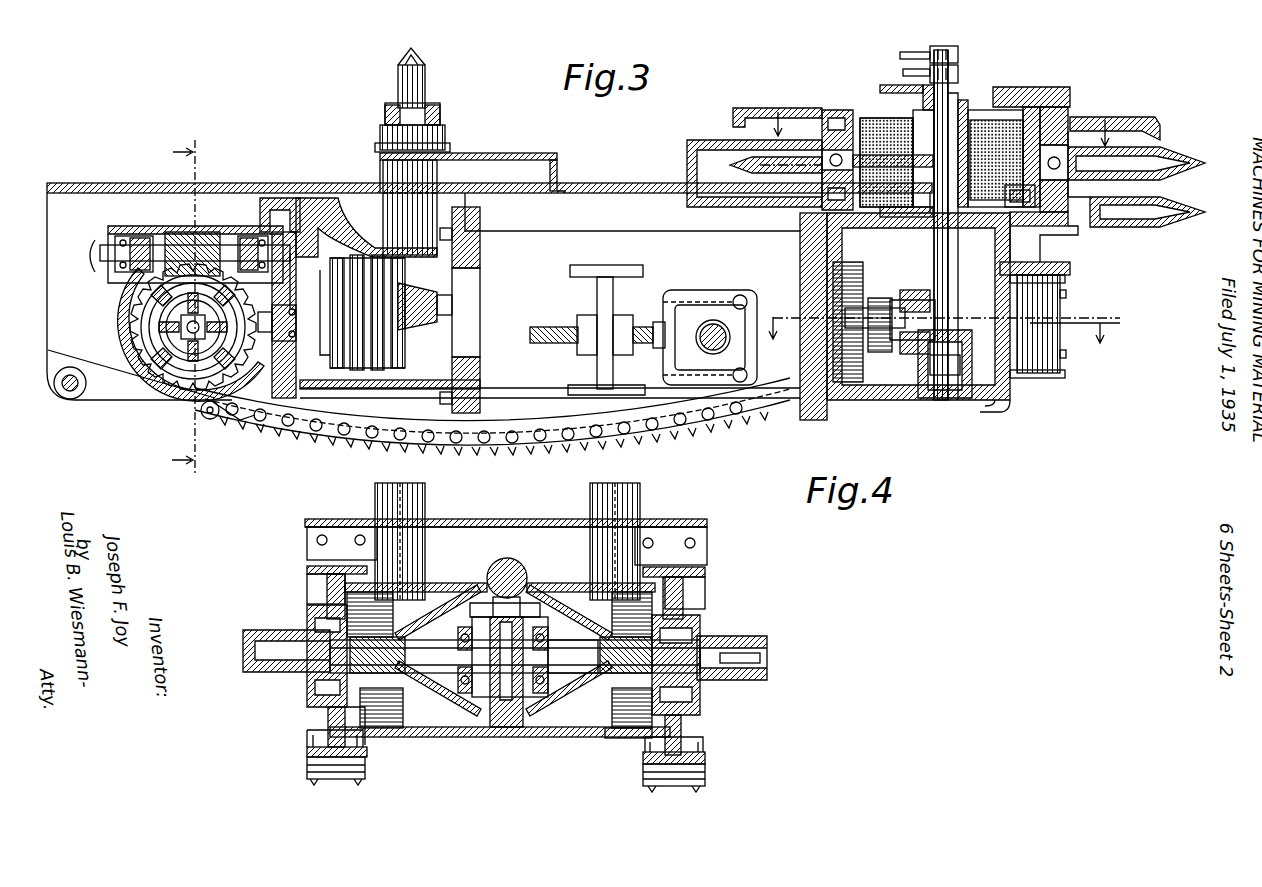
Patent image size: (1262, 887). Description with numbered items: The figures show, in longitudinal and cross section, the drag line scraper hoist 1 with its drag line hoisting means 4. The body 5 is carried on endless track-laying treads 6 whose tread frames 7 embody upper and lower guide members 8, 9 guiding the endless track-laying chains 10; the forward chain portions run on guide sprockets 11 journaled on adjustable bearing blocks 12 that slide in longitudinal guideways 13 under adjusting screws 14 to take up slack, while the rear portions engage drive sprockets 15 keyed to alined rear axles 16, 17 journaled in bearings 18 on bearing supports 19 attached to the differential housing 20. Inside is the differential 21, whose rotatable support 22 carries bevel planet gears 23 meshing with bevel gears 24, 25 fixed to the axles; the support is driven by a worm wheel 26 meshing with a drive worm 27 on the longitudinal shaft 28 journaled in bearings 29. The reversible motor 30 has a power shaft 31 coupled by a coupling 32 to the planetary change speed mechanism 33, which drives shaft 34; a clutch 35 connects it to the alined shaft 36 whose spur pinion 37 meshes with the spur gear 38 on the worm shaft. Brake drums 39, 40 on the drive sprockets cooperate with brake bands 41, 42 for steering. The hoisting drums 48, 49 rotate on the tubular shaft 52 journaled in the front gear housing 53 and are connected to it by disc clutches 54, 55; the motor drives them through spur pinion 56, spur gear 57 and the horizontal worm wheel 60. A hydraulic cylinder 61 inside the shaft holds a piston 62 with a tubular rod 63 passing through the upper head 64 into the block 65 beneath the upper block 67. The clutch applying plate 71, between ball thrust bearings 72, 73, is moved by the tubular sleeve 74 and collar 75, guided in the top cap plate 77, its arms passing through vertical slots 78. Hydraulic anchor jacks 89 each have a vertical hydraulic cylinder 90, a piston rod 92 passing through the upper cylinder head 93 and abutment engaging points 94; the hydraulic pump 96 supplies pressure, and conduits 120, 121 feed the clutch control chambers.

In FIG. 4, the drag line scraper hoist 1 is at (704, 521).
In FIG. 3, the drag line hoisting means 4 is at (175, 307).
In FIG. 3, the body 5 is at (943, 339).
In FIG. 3, the endless track-laying treads 6 is at (497, 452).
In FIG. 4, the endless track-laying treads 6 is at (307, 770).
In FIG. 3, the tread frames 7 is at (356, 440).
In FIG. 4, the tread frames 7 is at (310, 593).
In FIG. 4, the upper guide member 8 is at (307, 560).
In FIG. 4, the lower guide member 9 is at (305, 735).
In FIG. 3, the endless track-laying chains 10 is at (190, 412).
In FIG. 4, the endless track-laying chains 10 is at (322, 737).
In FIG. 3, the guide sprockets 11 is at (733, 430).
In FIG. 3, the adjustable bearing blocks 12 is at (708, 300).
In FIG. 3, the longitudinal guideways 13 is at (690, 310).
In FIG. 3, the adjusting screws 14 is at (567, 323).
In FIG. 4, the drive sprockets 15 is at (317, 580).
In FIG. 4, the rear axle 16 is at (428, 715).
In FIG. 4, the rear axle 17 is at (597, 673).
In FIG. 4, the bearings 18 is at (317, 693).
In FIG. 4, the bearing supports 19 is at (393, 740).
In FIG. 3, the differential housing 20 is at (140, 380).
In FIG. 4, the differential housing 20 is at (510, 730).
In FIG. 4, the differential 21 is at (462, 700).
In FIG. 4, the rotatable support 22 is at (520, 700).
In FIG. 3, the bevel planet gears 23 is at (190, 300).
In FIG. 4, the bevel planet gears 23 is at (520, 623).
In FIG. 4, the bevel gear 24 is at (475, 630).
In FIG. 4, the bevel gear 25 is at (558, 645).
In FIG. 3, the worm wheel 26 is at (137, 318).
In FIG. 4, the worm wheel 26 is at (492, 740).
In FIG. 3, the drive worm 27 is at (177, 227).
In FIG. 4, the drive worm 27 is at (509, 557).
In FIG. 3, the longitudinal shaft 28 is at (227, 227).
In FIG. 3, the bearings 29 is at (133, 227).
In FIG. 3, the motor 30 is at (600, 232).
In FIG. 3, the power shaft 31 is at (467, 303).
In FIG. 3, the coupling 32 is at (417, 280).
In FIG. 3, the planetary slip controlled change speed mechanism 33 is at (370, 253).
In FIG. 3, the shaft 34 is at (307, 217).
In FIG. 3, the clutch 35 is at (296, 318).
In FIG. 3, the alined shaft 36 is at (281, 327).
In FIG. 3, the spur pinion 37 is at (233, 424).
In FIG. 3, the spur gear 38 is at (280, 215).
In FIG. 4, the brake drum 39 is at (353, 723).
In FIG. 4, the brake drum 40 is at (637, 740).
In FIG. 4, the brake band 41 is at (373, 740).
In FIG. 4, the brake band 42 is at (617, 740).
In FIG. 3, the upper hoisting drum 48 is at (1140, 118).
In FIG. 3, the lower hoisting drum 49 is at (1157, 177).
In FIG. 3, the tubular shaft 52 is at (1060, 277).
In FIG. 3, the front gear housing 53 is at (1010, 388).
In FIG. 3, the disc clutch 54 is at (1035, 140).
In FIG. 3, the disc clutch 55 is at (1040, 197).
In FIG. 3, the spur pinion 56 is at (853, 327).
In FIG. 3, the spur gear 57 is at (862, 330).
In FIG. 3, the horizontal worm wheel 60 is at (1003, 397).
In FIG. 3, the hydraulic cylinder 61 is at (930, 333).
In FIG. 3, the piston 62 is at (945, 368).
In FIG. 3, the tubular rod 63 is at (937, 368).
In FIG. 3, the upper head 64 is at (1040, 295).
In FIG. 3, the block 65 is at (958, 78).
In FIG. 3, the upper block 67 is at (958, 54).
In FIG. 3, the clutch applying plate 71 is at (1068, 135).
In FIG. 3, the ball thrust bearing 72 is at (897, 130).
In FIG. 3, the ball thrust bearing 73 is at (1010, 123).
In FIG. 3, the tubular sleeve 74 is at (963, 123).
In FIG. 3, the collar 75 is at (1027, 220).
In FIG. 3, the top cap plate 77 is at (1003, 113).
In FIG. 3, the vertical slots 78 is at (897, 113).
In FIG. 3, the hydraulic anchor jacks 89 is at (425, 92).
In FIG. 3, the vertical hydraulic cylinder 90 is at (437, 197).
In FIG. 4, the vertical hydraulic cylinder 90 is at (427, 504).
In FIG. 3, the piston rod 92 is at (395, 100).
In FIG. 3, the upper cylinder head 93 is at (382, 130).
In FIG. 3, the abutment engaging points 94 is at (405, 63).
In FIG. 3, the hydraulic pump 96 is at (1057, 353).
In FIG. 3, the conduit 120 is at (930, 53).
In FIG. 3, the conduit 121 is at (923, 73).